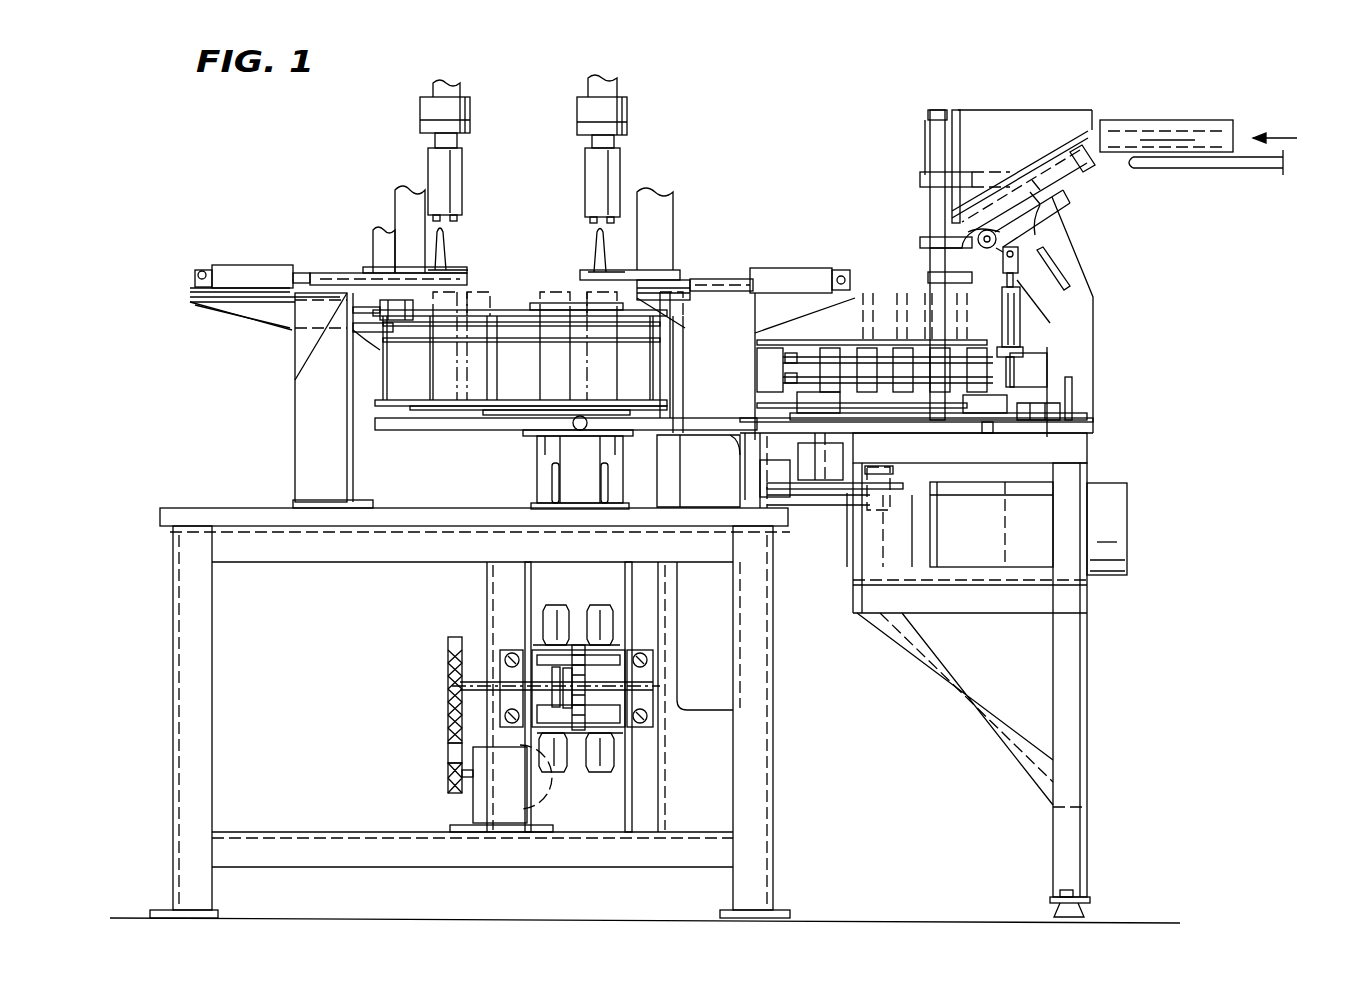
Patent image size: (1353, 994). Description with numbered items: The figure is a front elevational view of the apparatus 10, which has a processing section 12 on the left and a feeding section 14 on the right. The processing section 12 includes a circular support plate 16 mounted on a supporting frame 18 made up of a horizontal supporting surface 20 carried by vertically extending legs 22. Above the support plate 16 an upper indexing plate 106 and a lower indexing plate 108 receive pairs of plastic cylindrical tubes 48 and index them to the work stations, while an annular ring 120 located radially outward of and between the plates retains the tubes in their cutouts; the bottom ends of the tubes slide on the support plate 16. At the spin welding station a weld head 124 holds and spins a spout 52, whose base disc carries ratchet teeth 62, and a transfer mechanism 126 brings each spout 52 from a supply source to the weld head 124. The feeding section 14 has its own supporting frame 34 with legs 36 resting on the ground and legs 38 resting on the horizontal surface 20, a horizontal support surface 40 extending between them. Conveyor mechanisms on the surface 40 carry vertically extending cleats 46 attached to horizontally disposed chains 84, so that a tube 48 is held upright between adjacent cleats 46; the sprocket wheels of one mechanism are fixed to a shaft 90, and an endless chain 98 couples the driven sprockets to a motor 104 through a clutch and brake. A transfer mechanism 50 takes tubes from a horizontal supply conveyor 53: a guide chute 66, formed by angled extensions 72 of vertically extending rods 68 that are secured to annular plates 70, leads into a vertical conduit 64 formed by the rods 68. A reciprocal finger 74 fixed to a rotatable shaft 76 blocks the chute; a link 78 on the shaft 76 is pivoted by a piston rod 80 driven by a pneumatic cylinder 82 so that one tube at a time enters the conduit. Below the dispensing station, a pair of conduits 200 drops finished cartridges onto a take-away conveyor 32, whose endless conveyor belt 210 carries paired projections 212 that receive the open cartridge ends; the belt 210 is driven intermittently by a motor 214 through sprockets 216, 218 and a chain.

The apparatus 10 is at (198, 183).
The processing section 12 is at (384, 203).
The feeding section 14 is at (898, 158).
The support plate 16 is at (451, 426).
The supporting frame 18 is at (146, 563).
The horizontal supporting surface 20 is at (203, 506).
The legs 22 is at (172, 688).
The take-away conveyor 32 is at (477, 628).
The supporting frame 34 is at (1114, 468).
The legs 36 is at (1088, 676).
The legs 38 is at (772, 498).
The horizontal support surface 40 is at (967, 438).
The cleats 46 is at (764, 356).
The plastic cylindrical tube 48 is at (1156, 120).
The transfer mechanism 50 is at (1070, 250).
The spout 52 is at (450, 250).
The supply conveyor 53 is at (1228, 168).
The ratchet teeth 62 is at (455, 218).
The vertical conduit 64 is at (1022, 320).
The guide chute 66 is at (1082, 168).
The rods 68 is at (935, 283).
The annular plates 70 is at (935, 250).
The extensions 72 is at (1040, 165).
The reciprocal finger 74 is at (1058, 201).
The rotatable shaft 76 is at (985, 229).
The link 78 is at (1020, 250).
The piston rod 80 is at (1068, 282).
The pneumatic cylinder 82 is at (1022, 334).
The chains 84 is at (790, 359).
The shaft 90 is at (822, 450).
The endless chain 98 is at (810, 490).
The motor 104 is at (1118, 510).
The upper indexing plate 106 is at (511, 304).
The lower indexing plate 108 is at (522, 401).
The annular ring 120 is at (357, 358).
The weld head 124 is at (463, 175).
The transfer mechanism 126 is at (302, 265).
The conduits 200 is at (616, 510).
The endless conveyor belt 210 is at (630, 733).
The projections 212 is at (598, 772).
The motor 214 is at (472, 808).
The sprocket 216 is at (448, 663).
The sprocket 218 is at (448, 768).